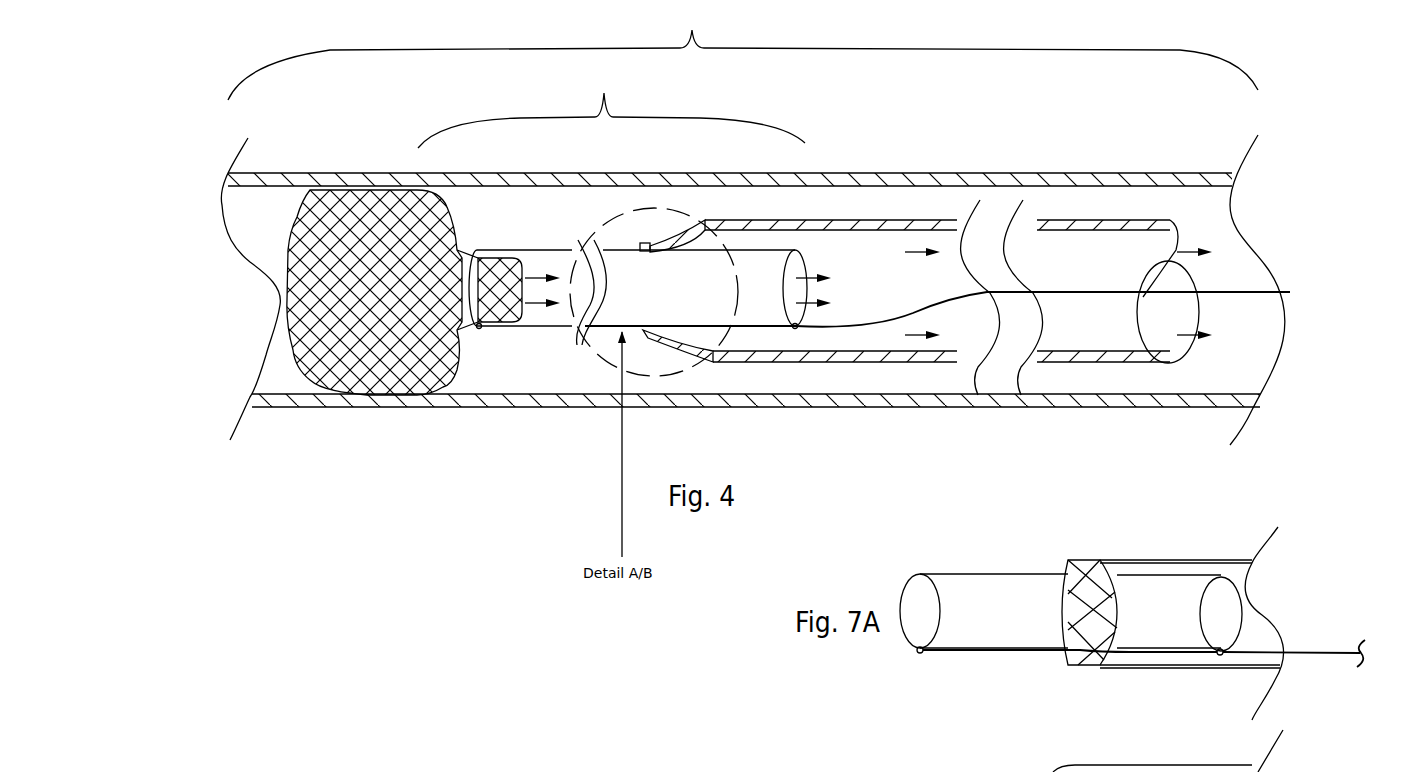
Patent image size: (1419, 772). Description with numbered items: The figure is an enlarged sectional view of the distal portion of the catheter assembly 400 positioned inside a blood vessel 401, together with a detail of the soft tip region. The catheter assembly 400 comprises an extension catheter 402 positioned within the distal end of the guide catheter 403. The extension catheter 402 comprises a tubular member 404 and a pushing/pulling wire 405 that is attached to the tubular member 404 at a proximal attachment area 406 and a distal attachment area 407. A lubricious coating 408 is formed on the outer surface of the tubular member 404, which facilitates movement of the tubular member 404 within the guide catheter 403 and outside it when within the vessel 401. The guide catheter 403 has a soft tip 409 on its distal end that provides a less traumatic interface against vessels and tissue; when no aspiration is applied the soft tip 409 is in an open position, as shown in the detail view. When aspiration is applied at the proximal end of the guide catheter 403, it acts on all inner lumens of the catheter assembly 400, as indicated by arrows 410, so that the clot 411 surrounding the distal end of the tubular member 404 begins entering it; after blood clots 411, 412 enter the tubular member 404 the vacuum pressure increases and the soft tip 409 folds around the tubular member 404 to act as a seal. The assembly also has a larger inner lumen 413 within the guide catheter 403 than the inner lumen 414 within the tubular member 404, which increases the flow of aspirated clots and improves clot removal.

In FIG. 4, the catheter assembly 400 is at (743, 52).
In FIG. 4, the blood vessel 401 is at (273, 170).
In FIG. 4, the extension catheter 402 is at (558, 350).
In FIG. 4, the guide catheter 403 is at (935, 218).
In FIG. 7A, the guide catheter 403 is at (1195, 668).
In FIG. 4, the tubular member 404 is at (546, 231).
In FIG. 7A, the tubular member 404 is at (970, 653).
In FIG. 4, the pushing/pulling wire 405 is at (623, 373).
In FIG. 7A, the pushing/pulling wire 405 is at (1322, 663).
In FIG. 4, the proximal attachment area 406 is at (797, 328).
In FIG. 4, the distal attachment area 407 is at (480, 328).
In FIG. 4, the lubricious coating 408 is at (525, 253).
In FIG. 4, the soft tip 409 is at (650, 338).
In FIG. 7A, the soft tip 409 is at (1082, 668).
In FIG. 4, the arrows 410 is at (812, 275).
In FIG. 4, the clot 411 is at (280, 298).
In FIG. 4, the blood clot 412 is at (505, 262).
In FIG. 4, the inner lumen 413 is at (1048, 255).
In FIG. 4, the inner lumen 414 is at (762, 290).